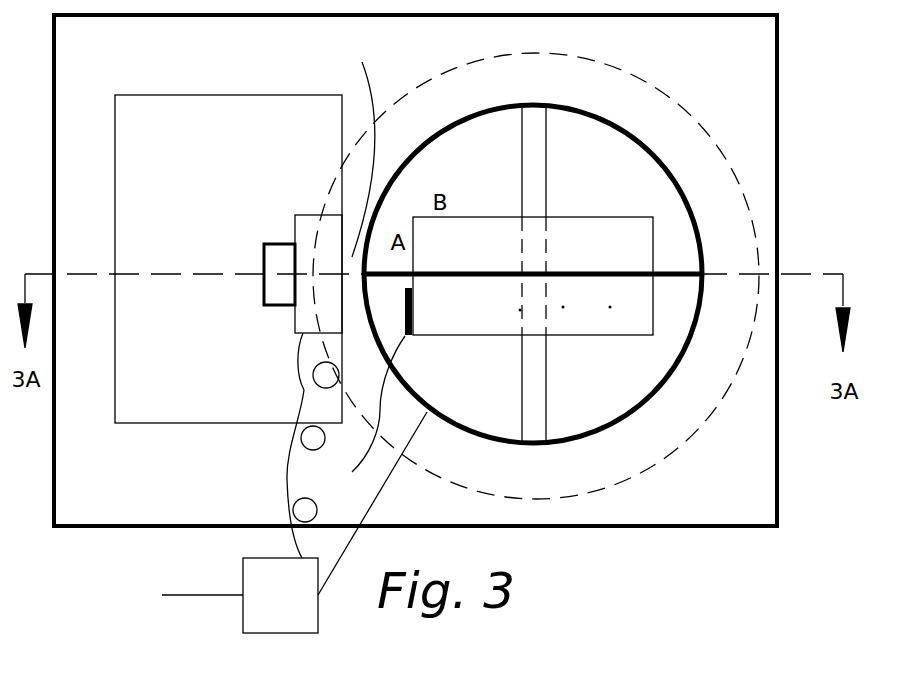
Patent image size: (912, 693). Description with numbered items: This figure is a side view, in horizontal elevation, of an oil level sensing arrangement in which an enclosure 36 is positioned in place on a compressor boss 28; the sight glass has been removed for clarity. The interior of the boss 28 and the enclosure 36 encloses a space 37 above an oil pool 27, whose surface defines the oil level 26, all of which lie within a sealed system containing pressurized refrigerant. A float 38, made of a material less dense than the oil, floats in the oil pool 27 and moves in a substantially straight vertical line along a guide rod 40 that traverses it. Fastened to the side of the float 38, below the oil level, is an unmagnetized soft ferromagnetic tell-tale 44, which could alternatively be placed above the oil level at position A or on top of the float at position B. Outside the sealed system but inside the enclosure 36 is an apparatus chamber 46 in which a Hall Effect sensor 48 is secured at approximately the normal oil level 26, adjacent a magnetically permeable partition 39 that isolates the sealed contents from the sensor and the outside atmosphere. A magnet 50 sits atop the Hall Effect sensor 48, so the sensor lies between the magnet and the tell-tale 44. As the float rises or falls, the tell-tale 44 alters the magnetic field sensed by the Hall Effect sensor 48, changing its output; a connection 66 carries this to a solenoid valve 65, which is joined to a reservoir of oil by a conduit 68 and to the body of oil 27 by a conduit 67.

The oil level 26 is at (630, 272).
The oil pool 27 is at (573, 377).
The compressor boss 28 is at (644, 81).
The enclosure 36 is at (125, 480).
The space 37 is at (433, 182).
The float 38 is at (428, 304).
The magnetically permeable partition 39 is at (349, 151).
The guide rod 40 is at (544, 155).
The ferromagnetic tell-tale 44 is at (359, 413).
The apparatus chamber 46 is at (150, 127).
The Hall Effect sensor 48 is at (296, 333).
The magnet 50 is at (264, 289).
The solenoid valve 65 is at (280, 595).
The connection 66 is at (286, 469).
The conduit 67 is at (372, 510).
The conduit 68 is at (200, 595).